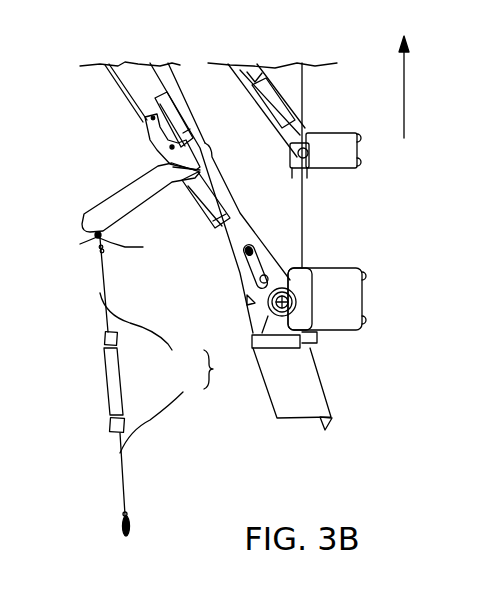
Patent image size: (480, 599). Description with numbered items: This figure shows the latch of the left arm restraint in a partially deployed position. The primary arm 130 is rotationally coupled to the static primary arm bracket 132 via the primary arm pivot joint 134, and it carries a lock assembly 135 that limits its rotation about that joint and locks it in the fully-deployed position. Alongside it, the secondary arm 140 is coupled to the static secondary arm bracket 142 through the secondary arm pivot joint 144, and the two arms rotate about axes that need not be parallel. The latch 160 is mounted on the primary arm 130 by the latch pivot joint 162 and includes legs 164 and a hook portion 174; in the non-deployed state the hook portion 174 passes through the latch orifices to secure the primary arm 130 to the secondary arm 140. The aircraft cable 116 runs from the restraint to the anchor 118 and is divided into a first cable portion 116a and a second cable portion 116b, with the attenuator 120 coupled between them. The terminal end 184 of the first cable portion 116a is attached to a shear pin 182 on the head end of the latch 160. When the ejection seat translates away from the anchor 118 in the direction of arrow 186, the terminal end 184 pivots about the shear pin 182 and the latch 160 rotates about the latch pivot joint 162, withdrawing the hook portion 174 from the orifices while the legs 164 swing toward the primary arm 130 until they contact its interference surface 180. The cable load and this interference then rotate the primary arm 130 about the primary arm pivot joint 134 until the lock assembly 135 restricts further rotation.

The aircraft cable 116 is at (219, 369).
The first cable portion 116a is at (147, 329).
The second cable portion 116b is at (157, 412).
The anchor 118 is at (131, 523).
The attenuator 120 is at (97, 381).
The primary arm 130 is at (243, 233).
The primary arm bracket 132 is at (330, 270).
The primary arm pivot joint 134 is at (297, 302).
The lock assembly 135 is at (282, 257).
The secondary arm 140 is at (272, 80).
The secondary arm bracket 142 is at (335, 140).
The secondary arm pivot joint 144 is at (305, 172).
The latch 160 is at (117, 195).
The latch pivot joint 162 is at (170, 147).
The legs 164 is at (187, 182).
The hook portion 174 is at (172, 98).
The interference surface 180 is at (208, 150).
The shear pin 182 is at (97, 236).
The terminal end 184 is at (126, 243).
The arrow 186 is at (405, 101).